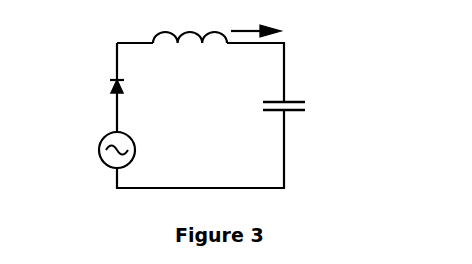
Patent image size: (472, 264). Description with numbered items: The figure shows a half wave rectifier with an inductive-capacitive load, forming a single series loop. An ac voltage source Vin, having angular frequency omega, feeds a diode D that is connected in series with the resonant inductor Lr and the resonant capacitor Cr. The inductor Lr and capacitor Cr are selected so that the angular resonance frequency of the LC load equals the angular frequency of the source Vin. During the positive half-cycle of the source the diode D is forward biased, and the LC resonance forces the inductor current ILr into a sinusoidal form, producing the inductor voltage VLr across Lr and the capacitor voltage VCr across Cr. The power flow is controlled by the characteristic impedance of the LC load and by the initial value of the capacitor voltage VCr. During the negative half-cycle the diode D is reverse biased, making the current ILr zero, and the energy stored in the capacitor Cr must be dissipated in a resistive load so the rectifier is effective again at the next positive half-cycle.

The resonant inductor Lr is at (190, 28).
The resonant capacitor Cr is at (294, 112).
The voltage source Vin is at (133, 178).
The inductor current ILr is at (256, 24).
The inductor voltage VLr is at (228, 51).
The capacitor voltage VCr is at (258, 140).
The diode D is at (117, 86).